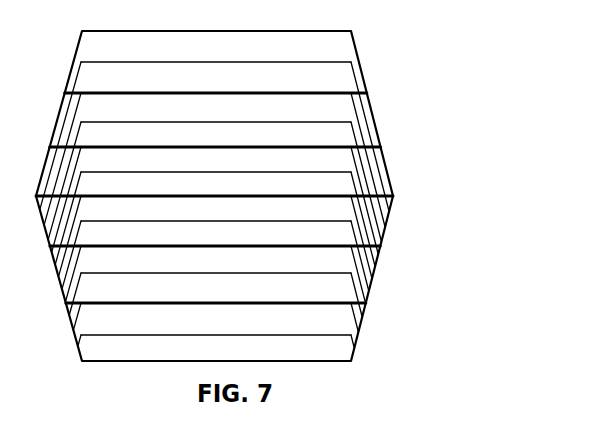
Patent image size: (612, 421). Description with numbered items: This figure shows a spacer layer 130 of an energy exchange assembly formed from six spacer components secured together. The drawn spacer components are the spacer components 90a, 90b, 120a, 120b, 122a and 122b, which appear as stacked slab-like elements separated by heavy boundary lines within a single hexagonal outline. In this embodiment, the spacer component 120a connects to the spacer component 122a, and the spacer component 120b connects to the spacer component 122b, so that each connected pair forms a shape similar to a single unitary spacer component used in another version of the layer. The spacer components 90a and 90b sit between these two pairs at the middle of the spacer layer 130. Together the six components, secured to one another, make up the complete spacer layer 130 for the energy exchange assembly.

The spacer layer 130 is at (55, 70).
The spacer component 120a is at (358, 60).
The spacer component 122a is at (374, 123).
The spacer component 90a is at (385, 167).
The spacer component 90b is at (386, 223).
The spacer component 122b is at (373, 273).
The spacer component 120b is at (357, 333).